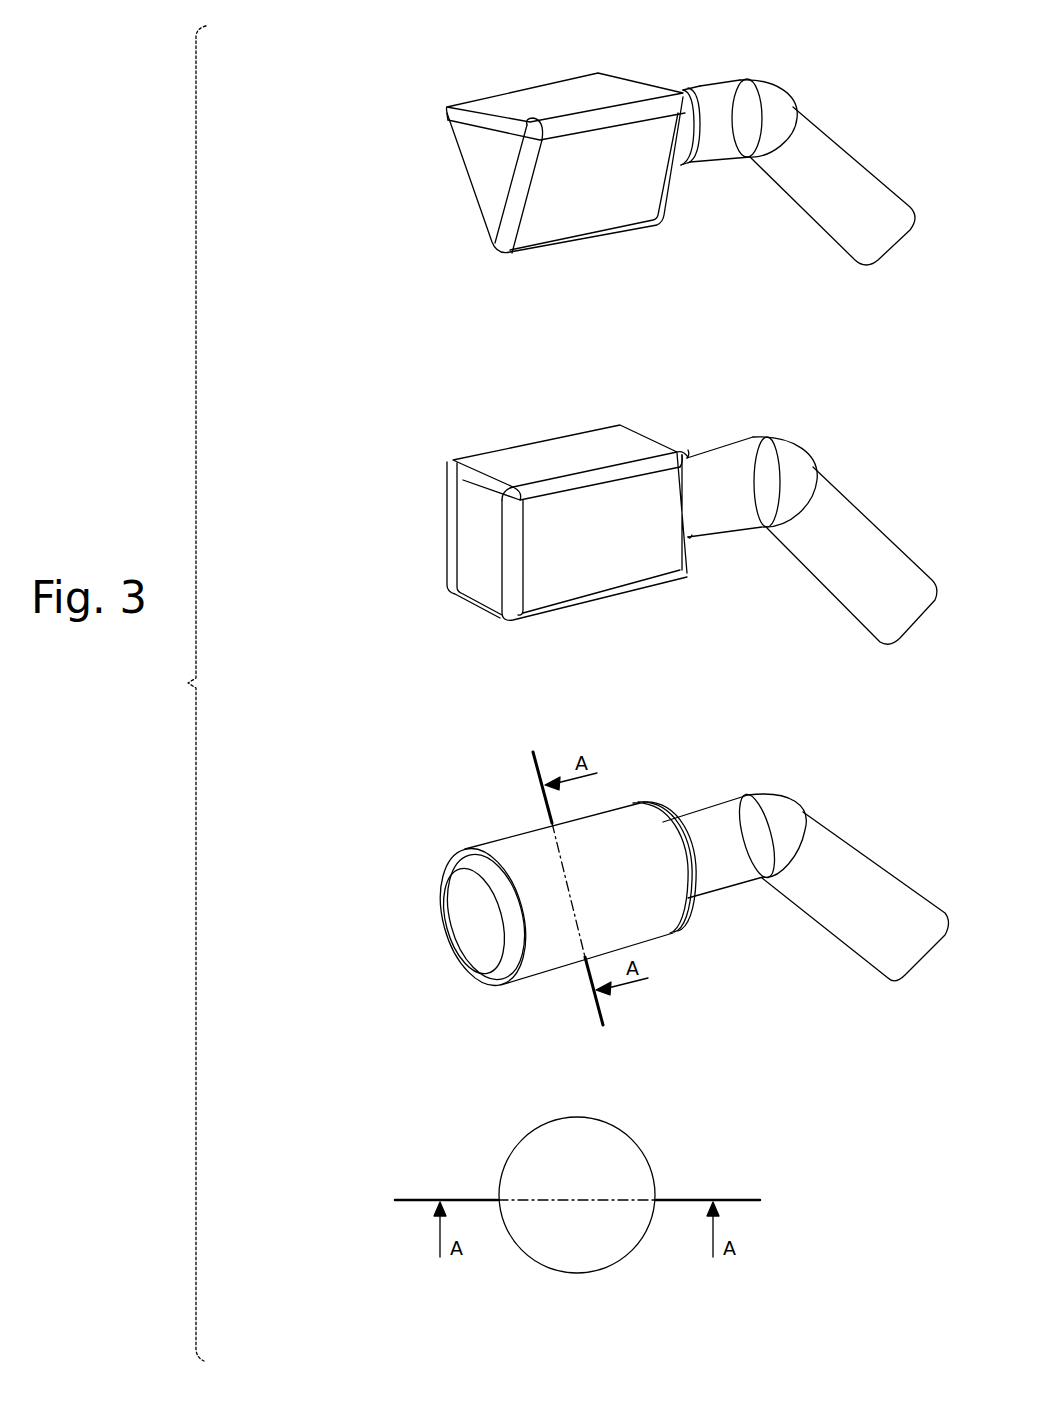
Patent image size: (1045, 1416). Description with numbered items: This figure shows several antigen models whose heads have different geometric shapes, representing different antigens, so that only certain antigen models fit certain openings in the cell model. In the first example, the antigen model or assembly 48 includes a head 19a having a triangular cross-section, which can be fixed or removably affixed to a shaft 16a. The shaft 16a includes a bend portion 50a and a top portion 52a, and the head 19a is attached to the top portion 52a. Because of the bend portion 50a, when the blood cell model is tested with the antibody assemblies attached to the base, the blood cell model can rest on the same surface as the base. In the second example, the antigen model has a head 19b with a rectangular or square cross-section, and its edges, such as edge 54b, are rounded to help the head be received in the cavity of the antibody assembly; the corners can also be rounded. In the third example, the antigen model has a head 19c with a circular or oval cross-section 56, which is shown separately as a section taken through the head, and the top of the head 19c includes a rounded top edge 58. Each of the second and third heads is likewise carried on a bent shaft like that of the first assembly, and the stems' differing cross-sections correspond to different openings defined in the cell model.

The antigen model or assembly 48 is at (511, 56).
The head 19a is at (578, 225).
The top portion 52a is at (705, 92).
The bend portion 50a is at (770, 97).
The shaft 16a is at (837, 232).
The edge 54b is at (467, 468).
The head 19b is at (473, 572).
The rounded top edge 58 is at (473, 857).
The head 19c is at (465, 918).
The circular or oval cross-section 56 is at (552, 1257).